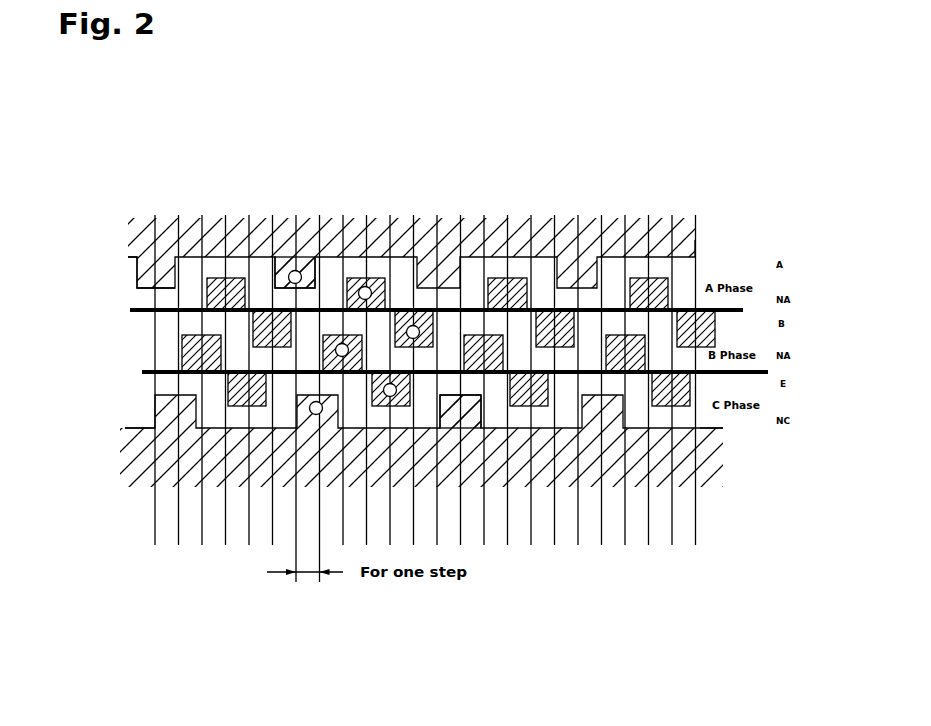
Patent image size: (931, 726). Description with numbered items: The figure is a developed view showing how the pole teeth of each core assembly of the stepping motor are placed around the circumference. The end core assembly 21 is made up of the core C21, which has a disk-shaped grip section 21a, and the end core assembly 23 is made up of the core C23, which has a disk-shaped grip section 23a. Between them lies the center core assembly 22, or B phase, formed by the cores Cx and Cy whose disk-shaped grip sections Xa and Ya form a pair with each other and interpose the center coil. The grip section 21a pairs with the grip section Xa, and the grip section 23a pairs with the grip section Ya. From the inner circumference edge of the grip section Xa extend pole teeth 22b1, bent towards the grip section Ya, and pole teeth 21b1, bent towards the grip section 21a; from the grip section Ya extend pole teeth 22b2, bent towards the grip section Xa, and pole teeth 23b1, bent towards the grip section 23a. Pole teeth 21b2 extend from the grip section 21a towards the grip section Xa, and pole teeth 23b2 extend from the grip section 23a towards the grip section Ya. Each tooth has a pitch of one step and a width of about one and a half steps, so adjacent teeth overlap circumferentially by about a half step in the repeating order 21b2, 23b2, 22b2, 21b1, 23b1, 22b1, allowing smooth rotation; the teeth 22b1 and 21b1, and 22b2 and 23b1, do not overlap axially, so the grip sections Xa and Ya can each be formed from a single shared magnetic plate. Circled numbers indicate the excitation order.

The end core assembly 21 is at (104, 240).
The grip section 21a is at (132, 250).
The pole teeth 21b1 is at (494, 280).
The pole teeth 21b2 is at (297, 270).
The center core assembly 22 is at (122, 364).
The pole teeth 22b1 is at (576, 340).
The pole teeth 22b2 is at (626, 336).
The end core assembly 23 is at (112, 465).
The grip section 23a is at (135, 428).
The pole teeth 23b1 is at (550, 405).
The pole teeth 23b2 is at (467, 403).
The grip section Xa is at (162, 311).
The grip section Ya is at (162, 372).
The core C21 is at (700, 245).
The core Cx is at (745, 318).
The core Cy is at (768, 373).
The core C23 is at (722, 450).